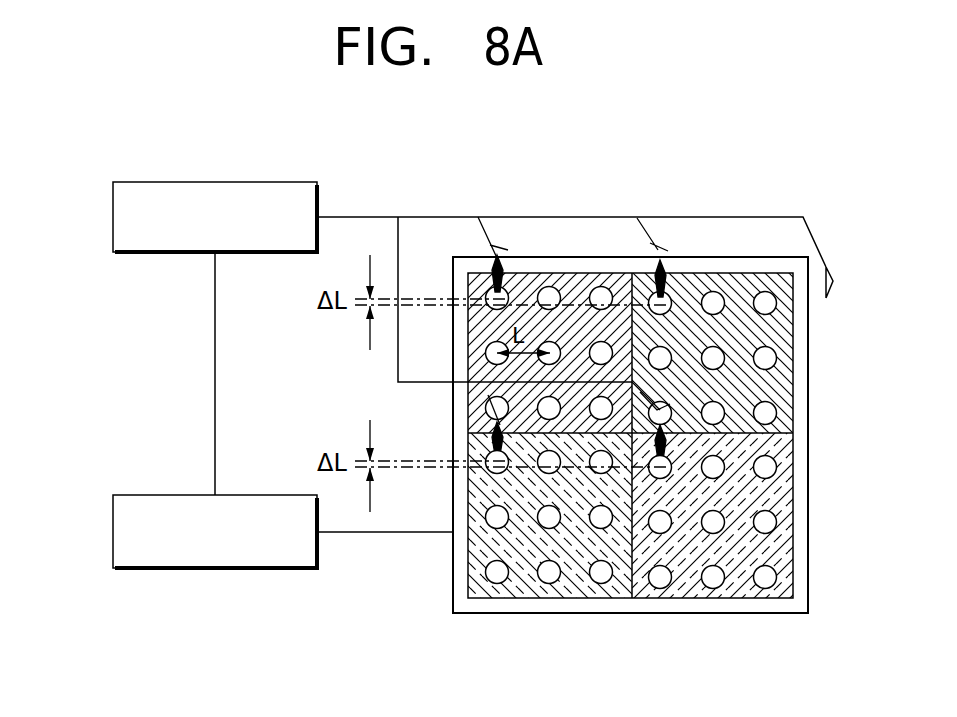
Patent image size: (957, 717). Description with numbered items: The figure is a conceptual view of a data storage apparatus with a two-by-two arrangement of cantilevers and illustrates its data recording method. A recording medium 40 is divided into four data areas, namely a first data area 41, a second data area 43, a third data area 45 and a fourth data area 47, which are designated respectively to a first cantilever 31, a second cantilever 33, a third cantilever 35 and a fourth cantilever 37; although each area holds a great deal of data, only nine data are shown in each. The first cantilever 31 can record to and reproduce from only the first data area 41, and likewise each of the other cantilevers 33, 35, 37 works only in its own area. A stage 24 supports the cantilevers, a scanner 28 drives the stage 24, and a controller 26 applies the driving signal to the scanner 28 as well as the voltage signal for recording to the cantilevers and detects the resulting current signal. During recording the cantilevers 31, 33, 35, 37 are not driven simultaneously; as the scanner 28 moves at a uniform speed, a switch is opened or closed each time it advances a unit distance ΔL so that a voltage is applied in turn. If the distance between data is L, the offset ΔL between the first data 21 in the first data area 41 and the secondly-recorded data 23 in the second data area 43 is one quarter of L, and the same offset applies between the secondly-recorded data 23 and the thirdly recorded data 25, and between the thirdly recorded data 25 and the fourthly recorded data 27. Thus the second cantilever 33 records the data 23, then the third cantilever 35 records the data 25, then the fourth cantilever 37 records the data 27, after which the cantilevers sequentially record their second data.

The first data 21 is at (496, 287).
The secondly-recorded data 23 is at (670, 305).
The stage 24 is at (808, 437).
The thirdly recorded data 25 is at (493, 468).
The controller 26 is at (113, 216).
The fourthly recorded data 27 is at (670, 465).
The scanner 28 is at (113, 531).
The first cantilever 31 is at (497, 256).
The second cantilever 33 is at (660, 258).
The third cantilever 35 is at (486, 407).
The fourth cantilever 37 is at (658, 410).
The recording medium 40 is at (667, 417).
The first data area 41 is at (520, 273).
The second data area 43 is at (690, 273).
The third data area 45 is at (521, 598).
The fourth data area 47 is at (678, 598).